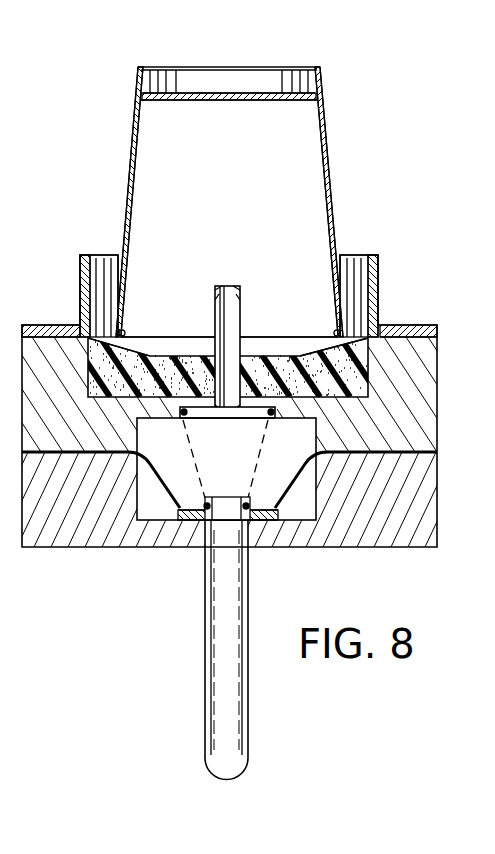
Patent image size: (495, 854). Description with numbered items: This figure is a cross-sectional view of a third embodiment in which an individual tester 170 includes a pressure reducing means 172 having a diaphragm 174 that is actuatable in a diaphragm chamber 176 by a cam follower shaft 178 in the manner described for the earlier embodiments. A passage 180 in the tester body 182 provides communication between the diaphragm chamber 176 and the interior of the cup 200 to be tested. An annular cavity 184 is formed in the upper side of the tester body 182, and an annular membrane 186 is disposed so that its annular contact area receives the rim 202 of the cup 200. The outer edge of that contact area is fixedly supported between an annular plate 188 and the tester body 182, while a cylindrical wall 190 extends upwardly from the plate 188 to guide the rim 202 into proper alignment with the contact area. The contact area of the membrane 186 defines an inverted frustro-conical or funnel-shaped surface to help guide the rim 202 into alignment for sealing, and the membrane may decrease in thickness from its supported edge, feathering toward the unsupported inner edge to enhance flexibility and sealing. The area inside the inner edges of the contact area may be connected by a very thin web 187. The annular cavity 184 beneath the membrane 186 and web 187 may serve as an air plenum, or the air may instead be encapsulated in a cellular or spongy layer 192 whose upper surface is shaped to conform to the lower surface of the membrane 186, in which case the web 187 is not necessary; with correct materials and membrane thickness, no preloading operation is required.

The individual tester 170 is at (360, 226).
The pressure reducing means 172 is at (140, 614).
The diaphragm 174 is at (137, 546).
The diaphragm chamber 176 is at (180, 452).
The cam follower shaft 178 is at (205, 726).
The passage 180 is at (228, 318).
The tester body 182 is at (437, 414).
The annular cavity 184 is at (362, 380).
The annular membrane 186 is at (24, 338).
The web 187 is at (160, 358).
The annular plate 188 is at (63, 324).
The cylindrical wall 190 is at (80, 275).
The layer of cellular material 192 is at (343, 357).
The cup 200 is at (325, 142).
The rim 202 is at (268, 337).